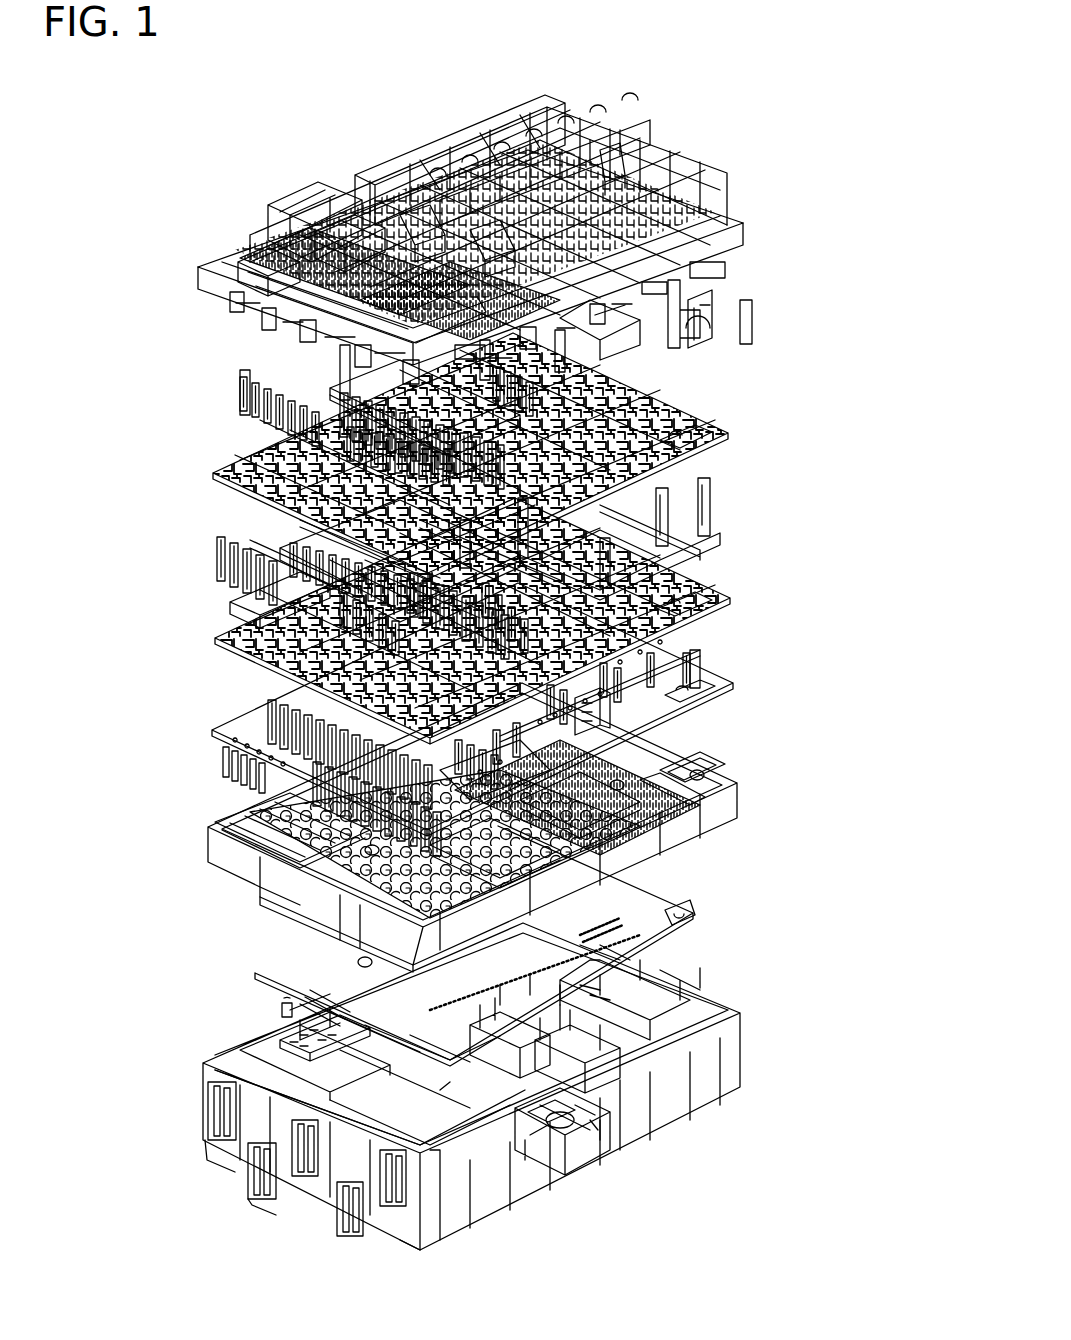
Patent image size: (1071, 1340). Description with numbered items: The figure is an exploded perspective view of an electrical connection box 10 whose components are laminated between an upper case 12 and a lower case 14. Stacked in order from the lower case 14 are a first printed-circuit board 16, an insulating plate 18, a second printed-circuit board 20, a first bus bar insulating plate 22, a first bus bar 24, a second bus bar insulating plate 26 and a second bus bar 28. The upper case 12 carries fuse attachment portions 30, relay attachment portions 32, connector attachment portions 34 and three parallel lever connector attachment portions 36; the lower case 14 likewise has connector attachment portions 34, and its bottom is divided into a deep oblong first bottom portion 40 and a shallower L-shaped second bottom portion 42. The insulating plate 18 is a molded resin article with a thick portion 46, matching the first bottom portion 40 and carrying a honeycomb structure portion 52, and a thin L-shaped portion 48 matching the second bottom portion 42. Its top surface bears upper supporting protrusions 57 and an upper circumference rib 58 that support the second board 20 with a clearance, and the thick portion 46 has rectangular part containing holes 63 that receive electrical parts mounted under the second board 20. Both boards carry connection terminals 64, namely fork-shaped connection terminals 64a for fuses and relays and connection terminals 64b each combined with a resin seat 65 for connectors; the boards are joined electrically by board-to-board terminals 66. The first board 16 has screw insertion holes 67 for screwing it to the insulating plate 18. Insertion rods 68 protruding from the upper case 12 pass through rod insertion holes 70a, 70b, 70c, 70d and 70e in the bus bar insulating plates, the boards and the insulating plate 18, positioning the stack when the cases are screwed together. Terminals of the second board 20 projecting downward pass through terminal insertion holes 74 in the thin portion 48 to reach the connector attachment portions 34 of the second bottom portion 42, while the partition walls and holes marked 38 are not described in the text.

The electrical connection box 10 is at (716, 68).
The upper case 12 is at (742, 162).
The lower case 14 is at (745, 999).
The first printed-circuit board 16 is at (700, 892).
The insulating plate 18 is at (742, 767).
The second printed-circuit board 20 is at (735, 671).
The first bus bar insulating plate 22 is at (737, 571).
The first bus bar 24 is at (728, 503).
The second bus bar insulating plate 26 is at (714, 390).
The second bus bar 28 is at (722, 299).
The fuse attachment portions 30 is at (266, 272).
The relay attachment portions 32 is at (420, 212).
The connector attachment portions 34 is at (290, 197).
The lever connector attachment portions 36 is at (486, 106).
The terminal insertion holes 38 is at (515, 160).
The first bottom portion 40 is at (460, 1120).
The second bottom portion 42 is at (335, 1085).
The thick portion 46 is at (245, 887).
The thin portion 48 is at (213, 851).
The honeycomb structure portion 52 is at (300, 855).
The upper supporting protrusions 57 is at (540, 835).
The upper circumference rib 58 is at (723, 770).
The part containing holes 63 is at (560, 820).
The connection terminals 64 is at (226, 762).
The fork-shaped connection terminals 64a is at (270, 730).
The connection terminals 64b is at (596, 697).
The resin seat 65 is at (597, 712).
The board-to-board terminals 66 is at (640, 810).
The screw insertion holes 67 is at (500, 1090).
The insertion rods 68 is at (700, 326).
The rod insertion hole 70a is at (683, 598).
The rod insertion hole 70b is at (690, 428).
The rod insertion hole 70c is at (365, 963).
The rod insertion hole 70d is at (690, 685).
The rod insertion hole 70e is at (372, 852).
The terminal insertion holes 74 is at (232, 830).